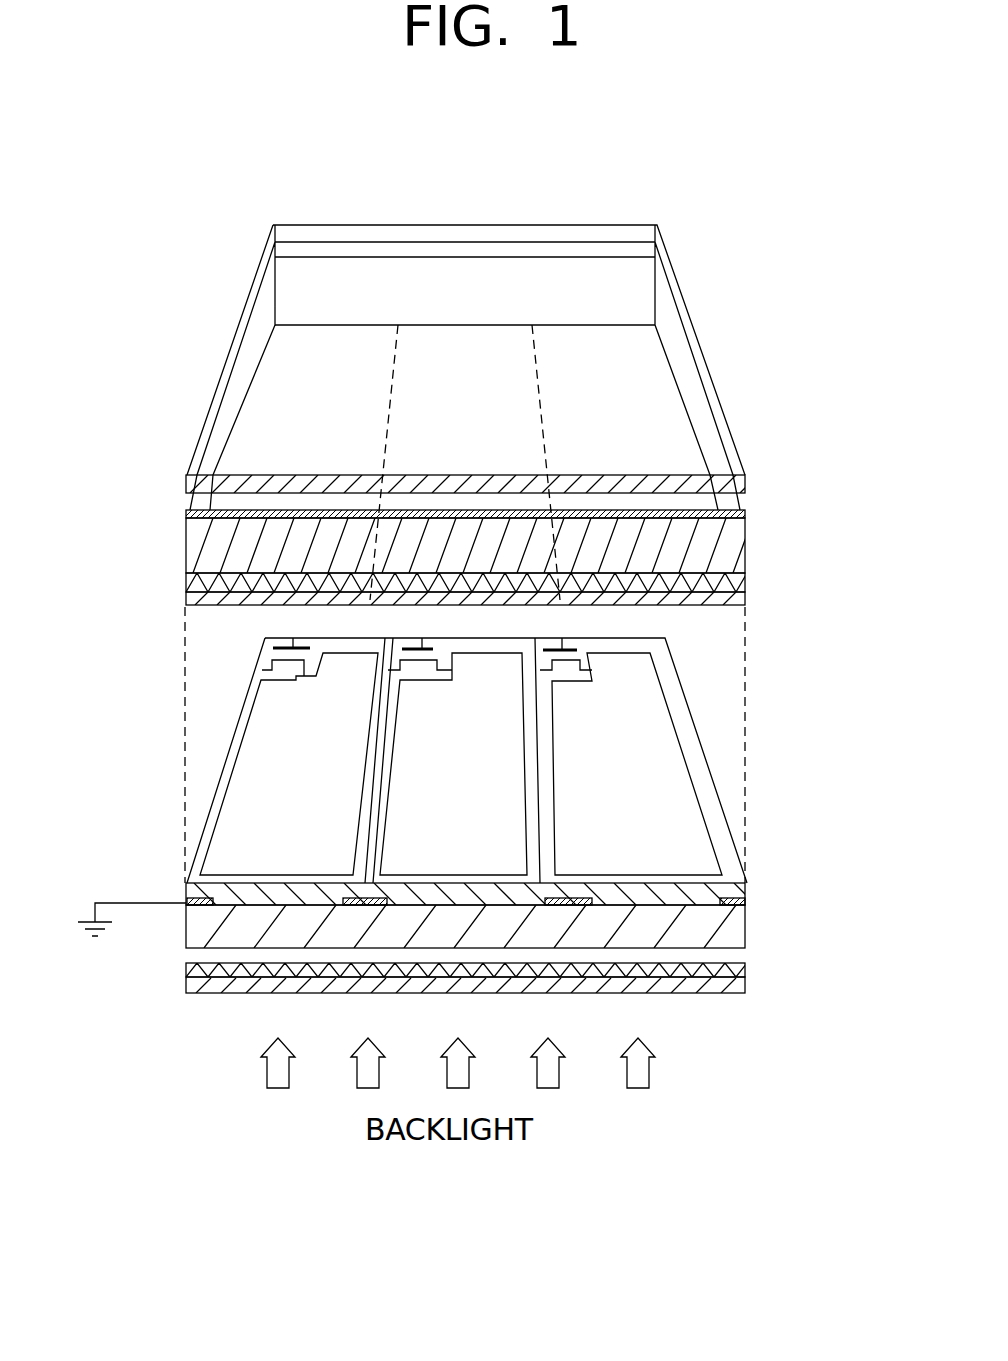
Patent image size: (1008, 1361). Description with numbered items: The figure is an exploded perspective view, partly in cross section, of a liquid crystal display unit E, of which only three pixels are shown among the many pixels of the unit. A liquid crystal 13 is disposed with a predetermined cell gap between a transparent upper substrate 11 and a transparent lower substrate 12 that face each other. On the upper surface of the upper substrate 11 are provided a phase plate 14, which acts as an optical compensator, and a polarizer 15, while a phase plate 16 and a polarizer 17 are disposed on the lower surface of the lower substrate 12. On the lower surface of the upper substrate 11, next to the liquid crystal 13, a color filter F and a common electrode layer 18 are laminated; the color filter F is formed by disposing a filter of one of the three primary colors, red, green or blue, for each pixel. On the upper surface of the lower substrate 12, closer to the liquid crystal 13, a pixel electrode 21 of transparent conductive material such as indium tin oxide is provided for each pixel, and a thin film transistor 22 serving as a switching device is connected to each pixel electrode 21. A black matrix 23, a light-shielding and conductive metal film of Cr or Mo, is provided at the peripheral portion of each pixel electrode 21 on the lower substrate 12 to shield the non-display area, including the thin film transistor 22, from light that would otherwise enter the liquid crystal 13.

The upper substrate 11 is at (186, 553).
The lower substrate 12 is at (735, 928).
The liquid crystal 13 is at (716, 692).
The phase plate 14 is at (186, 516).
The polarizer 15 is at (186, 485).
The phase plate 16 is at (732, 968).
The polarizer 17 is at (735, 985).
The common electrode layer 18 is at (745, 601).
The pixel electrode 21 is at (252, 765).
The thin film transistor 22 is at (289, 672).
The black matrix 23 is at (208, 897).
The liquid crystal display unit E is at (728, 331).
The color filter F is at (337, 345).